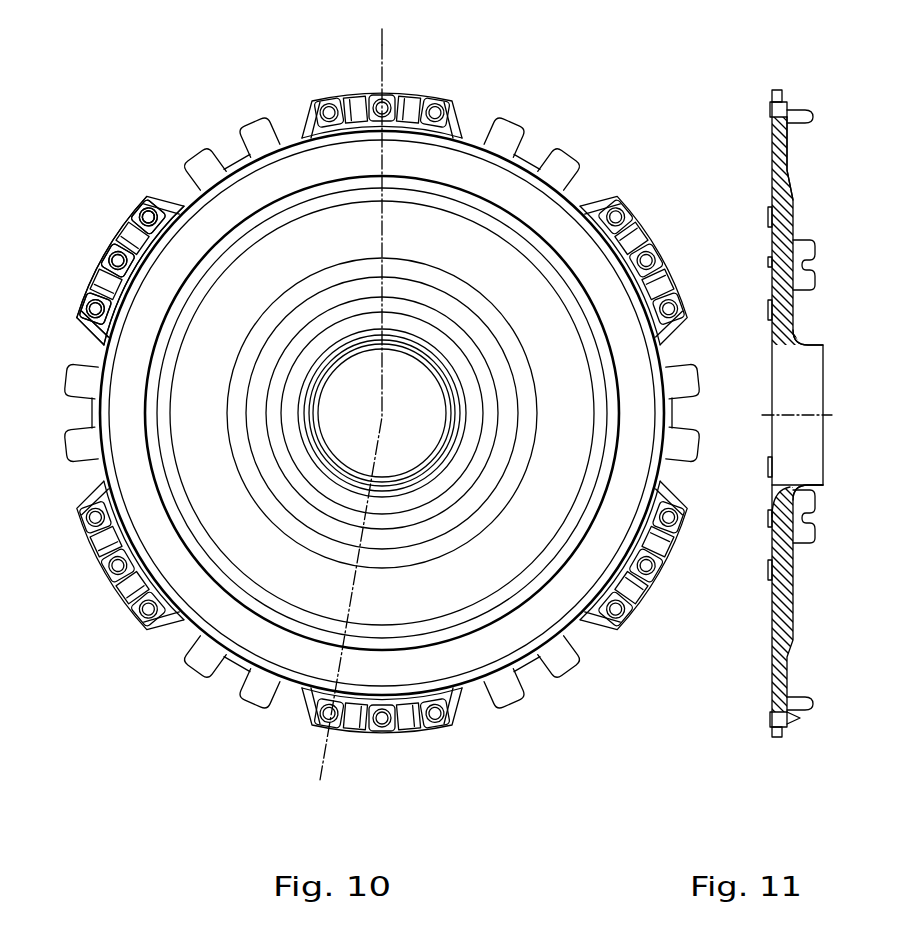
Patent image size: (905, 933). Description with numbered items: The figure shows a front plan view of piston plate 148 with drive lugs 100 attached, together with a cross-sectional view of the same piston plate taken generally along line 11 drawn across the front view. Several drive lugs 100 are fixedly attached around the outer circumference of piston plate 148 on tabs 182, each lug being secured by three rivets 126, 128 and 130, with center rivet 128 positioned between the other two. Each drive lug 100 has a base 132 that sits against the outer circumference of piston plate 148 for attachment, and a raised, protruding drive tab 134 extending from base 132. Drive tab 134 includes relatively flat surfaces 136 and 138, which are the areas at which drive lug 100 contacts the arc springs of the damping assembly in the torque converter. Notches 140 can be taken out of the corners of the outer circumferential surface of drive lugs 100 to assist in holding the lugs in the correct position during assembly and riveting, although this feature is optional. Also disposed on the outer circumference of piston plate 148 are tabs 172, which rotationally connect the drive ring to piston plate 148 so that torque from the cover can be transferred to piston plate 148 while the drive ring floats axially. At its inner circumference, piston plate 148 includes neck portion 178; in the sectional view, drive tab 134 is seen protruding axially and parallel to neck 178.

In FIG. 10, the section line 11 is at (380, 29).
In FIG. 10, the drive lug 100 is at (96, 247).
In FIG. 11, the drive lug 100 is at (807, 101).
In FIG. 10, the rivet 126 is at (80, 308).
In FIG. 10, the center rivet 128 is at (121, 253).
In FIG. 11, the center rivet 128 is at (780, 101).
In FIG. 10, the rivet 130 is at (152, 206).
In FIG. 11, the rivet 130 is at (777, 718).
In FIG. 10, the base 132 is at (103, 260).
In FIG. 11, the base 132 is at (780, 92).
In FIG. 10, the drive tab 134 is at (100, 265).
In FIG. 11, the drive tab 134 is at (801, 119).
In FIG. 10, the flat surface 136 is at (88, 290).
In FIG. 11, the flat surface 136 is at (809, 238).
In FIG. 10, the flat surface 138 is at (151, 209).
In FIG. 11, the flat surface 138 is at (800, 718).
In FIG. 10, the notch 140 is at (78, 320).
In FIG. 10, the piston plate 148 is at (450, 235).
In FIG. 11, the piston plate 148 is at (785, 167).
In FIG. 10, the tab 172 is at (203, 157).
In FIG. 11, the neck portion 178 is at (810, 343).
In FIG. 10, the tab 182 is at (42, 194).